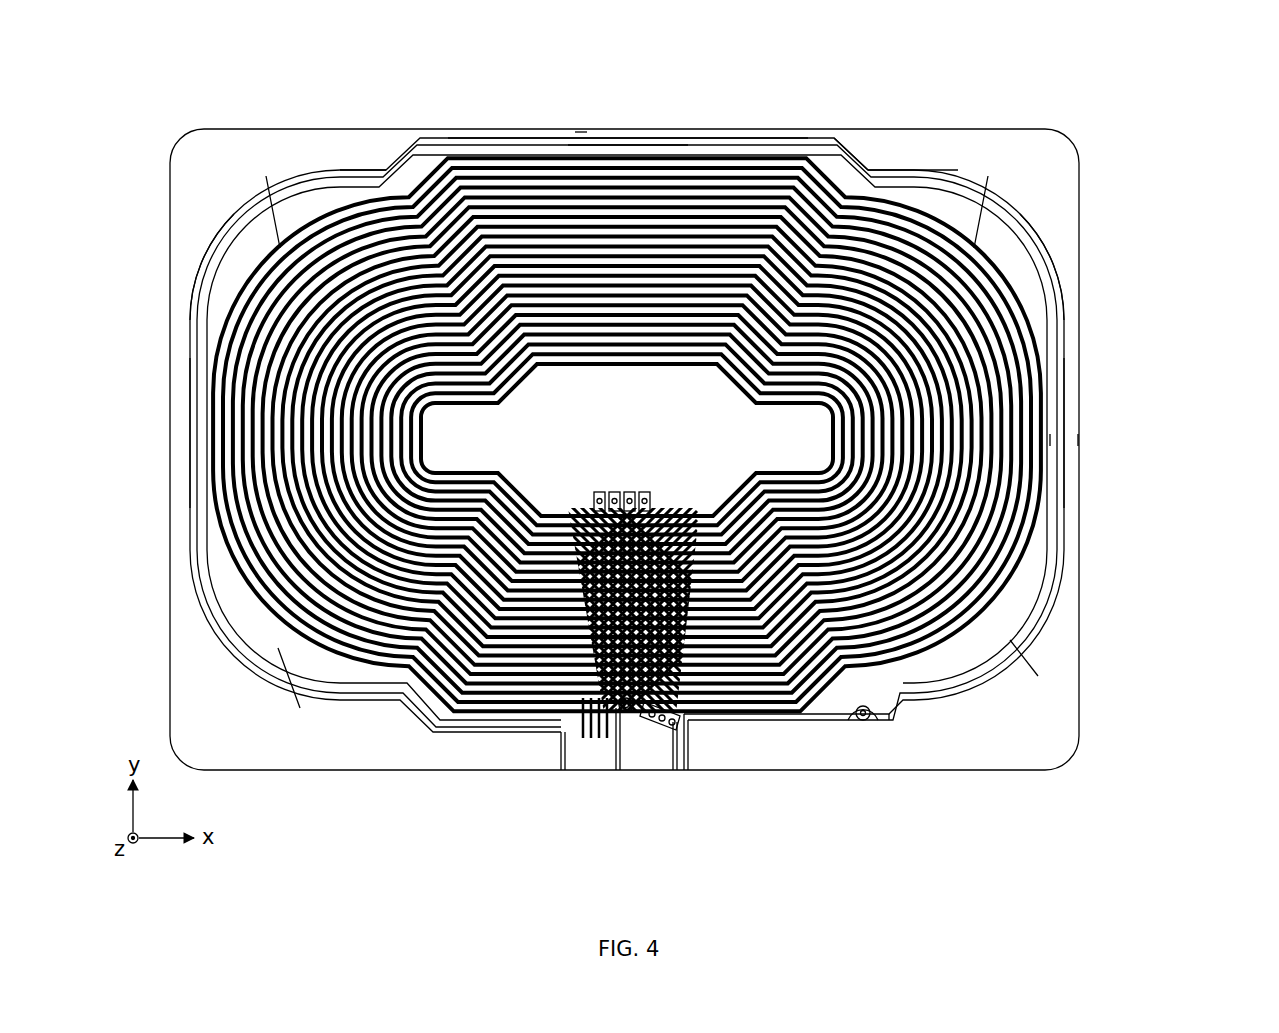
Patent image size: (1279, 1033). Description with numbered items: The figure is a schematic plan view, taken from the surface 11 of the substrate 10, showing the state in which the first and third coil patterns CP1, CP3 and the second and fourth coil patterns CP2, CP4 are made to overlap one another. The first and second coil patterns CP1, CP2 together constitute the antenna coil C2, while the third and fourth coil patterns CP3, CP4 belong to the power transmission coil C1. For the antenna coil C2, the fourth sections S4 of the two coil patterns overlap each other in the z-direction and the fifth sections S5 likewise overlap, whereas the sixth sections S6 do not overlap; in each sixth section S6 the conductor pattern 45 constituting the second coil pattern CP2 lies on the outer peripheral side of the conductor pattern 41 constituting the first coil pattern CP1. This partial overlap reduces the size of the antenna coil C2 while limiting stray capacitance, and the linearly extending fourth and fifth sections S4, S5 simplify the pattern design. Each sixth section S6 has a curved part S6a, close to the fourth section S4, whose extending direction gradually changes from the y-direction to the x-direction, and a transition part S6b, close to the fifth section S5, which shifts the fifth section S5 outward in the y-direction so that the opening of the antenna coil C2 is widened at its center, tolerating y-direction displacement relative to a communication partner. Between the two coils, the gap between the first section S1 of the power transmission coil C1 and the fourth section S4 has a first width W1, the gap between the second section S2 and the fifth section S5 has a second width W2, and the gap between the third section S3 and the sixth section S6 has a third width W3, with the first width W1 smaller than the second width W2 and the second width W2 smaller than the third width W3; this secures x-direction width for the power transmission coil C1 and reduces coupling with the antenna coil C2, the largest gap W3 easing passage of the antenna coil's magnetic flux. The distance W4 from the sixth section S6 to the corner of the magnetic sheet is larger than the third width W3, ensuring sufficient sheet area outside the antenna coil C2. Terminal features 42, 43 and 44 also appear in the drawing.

The substrate 10 is at (1075, 171).
The surface of the substrate 11 is at (619, 414).
The conductor pattern 41 is at (205, 232).
The terminal portion 42 is at (780, 722).
The terminal portion 43 is at (612, 740).
The hole 44 is at (856, 714).
The conductor pattern 45 is at (214, 248).
The first section S1 is at (424, 431).
The second section S2 is at (736, 150).
The third section S3 is at (212, 266).
The fourth section S4 is at (178, 472).
The fifth section S5 is at (622, 130).
The sixth section S6 is at (308, 142).
The curved part S6a is at (914, 140).
The transition part S6b is at (840, 140).
The first width W1 is at (1042, 432).
The second width W2 is at (573, 151).
The third width W3 is at (654, 444).
The distance to corner part of magnetic sheet W4 is at (228, 196).
The power transmission coil C1 is at (724, 469).
The antenna coil C2 is at (720, 469).
The first coil pattern CP1 is at (720, 469).
The second coil pattern CP2 is at (1042, 632).
The third coil pattern CP3 is at (724, 469).
The fourth coil pattern CP4 is at (724, 469).